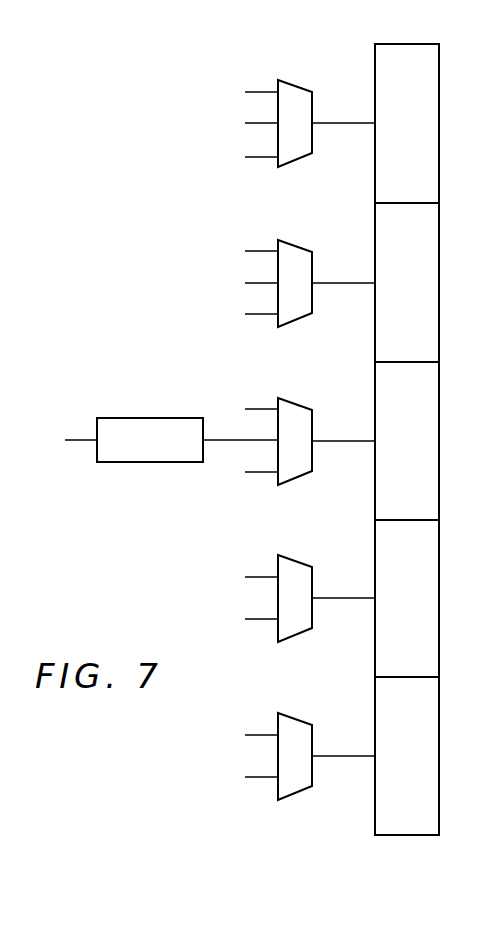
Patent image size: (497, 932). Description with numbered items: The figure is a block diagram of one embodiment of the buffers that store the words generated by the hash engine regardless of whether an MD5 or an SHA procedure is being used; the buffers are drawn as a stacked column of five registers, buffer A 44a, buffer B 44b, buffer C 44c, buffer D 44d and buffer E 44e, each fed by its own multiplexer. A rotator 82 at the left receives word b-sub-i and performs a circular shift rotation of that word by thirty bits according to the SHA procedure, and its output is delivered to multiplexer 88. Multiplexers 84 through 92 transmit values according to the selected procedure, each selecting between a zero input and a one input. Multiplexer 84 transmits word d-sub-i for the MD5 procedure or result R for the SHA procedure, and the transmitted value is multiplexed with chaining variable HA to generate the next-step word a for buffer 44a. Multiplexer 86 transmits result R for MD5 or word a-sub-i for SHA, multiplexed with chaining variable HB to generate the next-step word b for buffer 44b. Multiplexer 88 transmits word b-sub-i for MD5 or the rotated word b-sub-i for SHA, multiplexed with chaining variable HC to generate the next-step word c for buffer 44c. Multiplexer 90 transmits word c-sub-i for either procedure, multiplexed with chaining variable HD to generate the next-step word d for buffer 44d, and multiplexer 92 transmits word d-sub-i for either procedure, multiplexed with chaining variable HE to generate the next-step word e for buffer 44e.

The rotator 82 is at (150, 463).
The multiplexer 84 is at (292, 84).
The multiplexer 86 is at (292, 244).
The multiplexer 88 is at (292, 402).
The multiplexer 90 is at (295, 635).
The multiplexer 92 is at (295, 793).
The buffer 44a is at (429, 156).
The buffer 44b is at (429, 315).
The buffer 44c is at (429, 474).
The buffer 44d is at (429, 631).
The buffer 44e is at (429, 788).